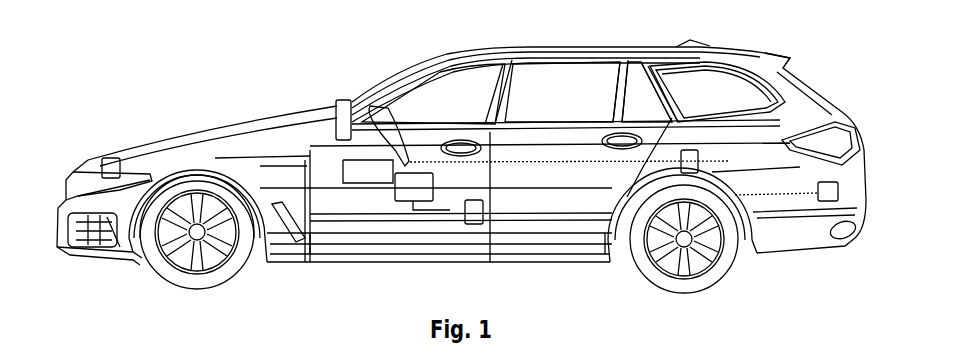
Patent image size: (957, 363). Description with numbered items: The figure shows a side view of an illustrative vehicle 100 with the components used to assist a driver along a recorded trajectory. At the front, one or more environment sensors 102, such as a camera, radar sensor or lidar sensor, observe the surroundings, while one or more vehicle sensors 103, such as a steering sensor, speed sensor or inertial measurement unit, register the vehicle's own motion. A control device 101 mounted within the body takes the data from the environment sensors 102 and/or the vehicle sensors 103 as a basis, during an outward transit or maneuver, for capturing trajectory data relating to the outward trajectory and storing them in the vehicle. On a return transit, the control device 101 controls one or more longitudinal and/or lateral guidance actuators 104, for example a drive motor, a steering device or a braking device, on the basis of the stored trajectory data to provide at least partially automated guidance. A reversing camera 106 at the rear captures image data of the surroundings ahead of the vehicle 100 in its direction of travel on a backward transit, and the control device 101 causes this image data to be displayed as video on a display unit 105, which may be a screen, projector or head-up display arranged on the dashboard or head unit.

The vehicle 100 is at (181, 70).
The control device 101 is at (395, 189).
The environment sensors 102 is at (106, 158).
The vehicle sensors 103 is at (474, 224).
The longitudinal and/or lateral guidance actuators 104 is at (698, 158).
The display unit 105 is at (335, 121).
The reversing camera 106 is at (829, 190).